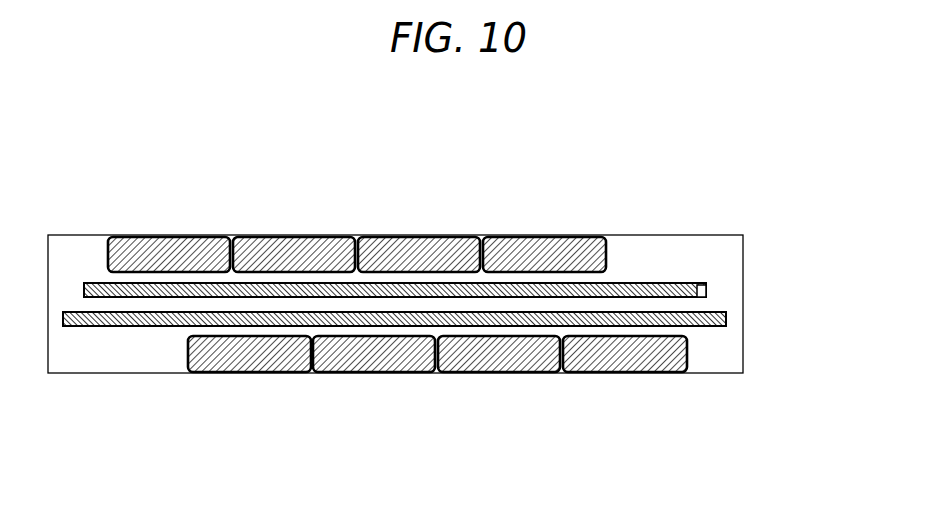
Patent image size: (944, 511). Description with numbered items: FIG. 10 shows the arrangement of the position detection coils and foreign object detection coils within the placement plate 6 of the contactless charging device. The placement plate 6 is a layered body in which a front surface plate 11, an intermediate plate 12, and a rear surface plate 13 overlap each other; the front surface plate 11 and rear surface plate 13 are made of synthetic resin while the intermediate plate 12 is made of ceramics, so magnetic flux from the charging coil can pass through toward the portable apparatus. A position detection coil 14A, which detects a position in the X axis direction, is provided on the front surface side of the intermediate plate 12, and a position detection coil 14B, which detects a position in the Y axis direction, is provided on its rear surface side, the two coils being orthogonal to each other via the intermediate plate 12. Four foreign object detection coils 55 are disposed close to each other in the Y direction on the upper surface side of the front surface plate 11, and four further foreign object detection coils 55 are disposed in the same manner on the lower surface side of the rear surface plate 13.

The placement plate 6 is at (443, 286).
The front surface plate 11 is at (688, 250).
The intermediate plate 12 is at (688, 303).
The rear surface plate 13 is at (723, 359).
The position detection coil 14A is at (638, 283).
The position detection coil 14B is at (690, 327).
The foreign object detection coils 55 is at (201, 236).